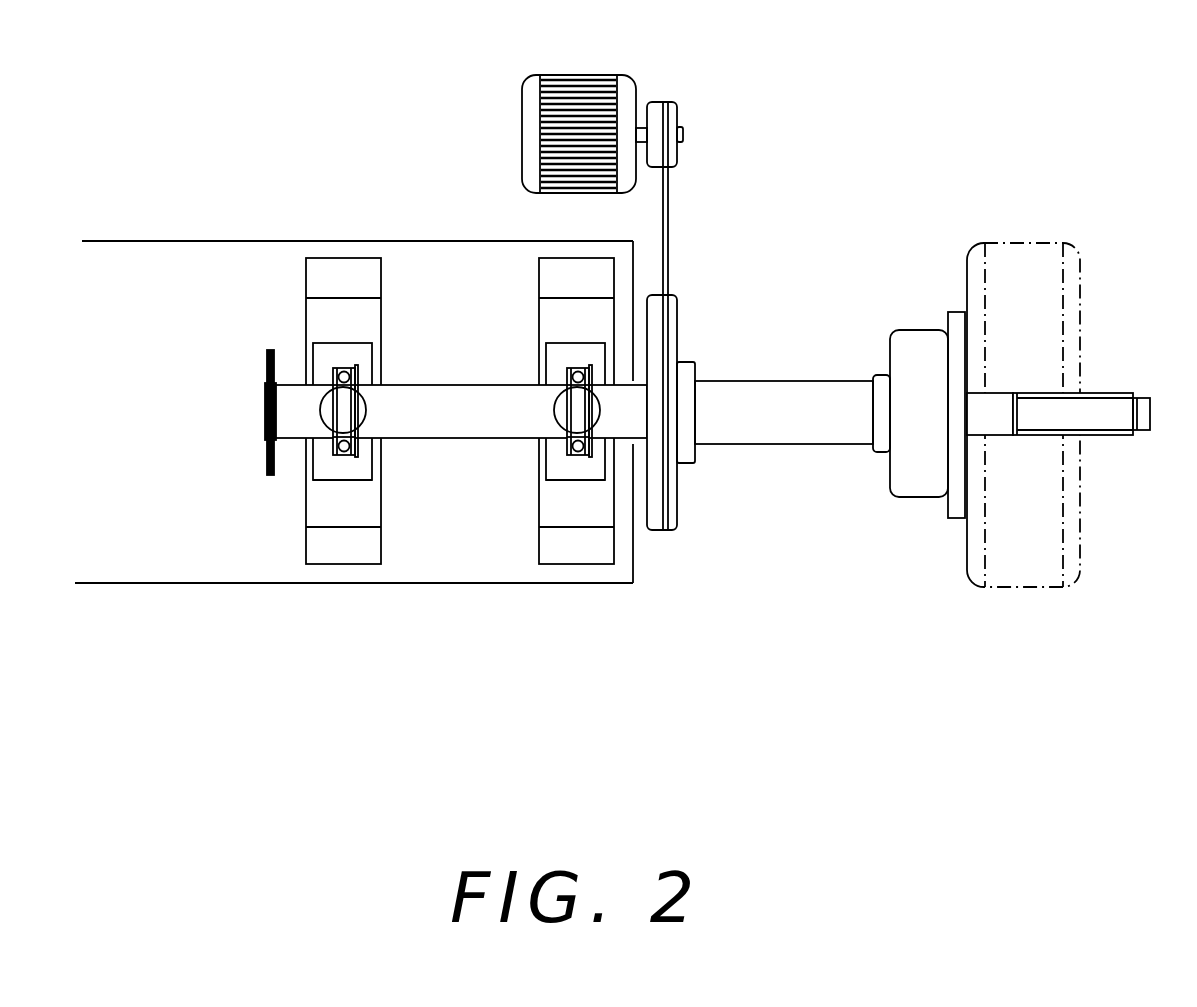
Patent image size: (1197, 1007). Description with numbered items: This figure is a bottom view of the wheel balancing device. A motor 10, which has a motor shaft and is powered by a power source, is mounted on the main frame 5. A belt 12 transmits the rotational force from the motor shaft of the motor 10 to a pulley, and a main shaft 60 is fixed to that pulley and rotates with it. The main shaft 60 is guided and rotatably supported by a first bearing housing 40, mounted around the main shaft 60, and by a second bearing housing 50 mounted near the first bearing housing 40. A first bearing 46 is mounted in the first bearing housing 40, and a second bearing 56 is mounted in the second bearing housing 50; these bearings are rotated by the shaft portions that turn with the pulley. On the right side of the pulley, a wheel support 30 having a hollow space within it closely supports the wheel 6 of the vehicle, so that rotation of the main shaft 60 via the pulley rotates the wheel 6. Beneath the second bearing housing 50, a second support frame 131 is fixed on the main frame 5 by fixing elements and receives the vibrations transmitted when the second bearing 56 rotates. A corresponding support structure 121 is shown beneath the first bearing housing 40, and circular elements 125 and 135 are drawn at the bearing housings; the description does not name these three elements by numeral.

The main frame 5 is at (90, 228).
The wheel 6 is at (1026, 231).
The motor 10 is at (513, 121).
The belt 12 is at (680, 217).
The wheel support 30 is at (922, 516).
The first bearing housing 40 is at (577, 496).
The first bearing 46 is at (573, 351).
The second bearing housing 50 is at (341, 496).
The second bearing 56 is at (340, 352).
The main shaft 60 is at (790, 327).
The pillow block 121 is at (530, 311).
The eccentric weight 125 is at (600, 427).
The second support frame 131 is at (300, 308).
The eccentric weight 135 is at (368, 415).